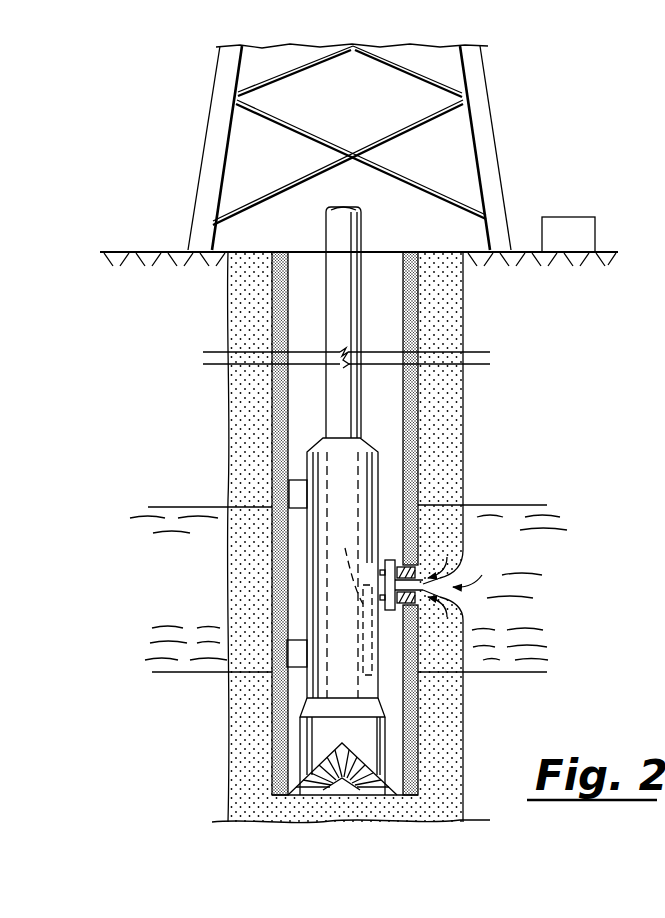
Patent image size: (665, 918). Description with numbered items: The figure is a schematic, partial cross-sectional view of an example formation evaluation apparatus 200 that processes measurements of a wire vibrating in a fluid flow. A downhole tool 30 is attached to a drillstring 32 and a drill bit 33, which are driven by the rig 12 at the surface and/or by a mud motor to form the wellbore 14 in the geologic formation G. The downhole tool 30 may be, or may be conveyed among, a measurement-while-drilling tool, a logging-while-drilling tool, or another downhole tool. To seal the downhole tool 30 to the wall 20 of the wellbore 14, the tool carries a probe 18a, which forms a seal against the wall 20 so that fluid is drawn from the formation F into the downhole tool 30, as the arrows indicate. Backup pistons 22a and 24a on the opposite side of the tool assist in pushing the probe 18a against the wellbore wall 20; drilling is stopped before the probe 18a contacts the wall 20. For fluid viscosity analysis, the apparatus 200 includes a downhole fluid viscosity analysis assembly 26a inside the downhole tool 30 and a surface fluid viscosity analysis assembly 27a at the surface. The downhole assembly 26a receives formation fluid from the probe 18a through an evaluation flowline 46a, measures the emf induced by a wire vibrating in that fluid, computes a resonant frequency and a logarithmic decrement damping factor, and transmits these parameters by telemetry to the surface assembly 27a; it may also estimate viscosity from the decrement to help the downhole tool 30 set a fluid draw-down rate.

The formation evaluation apparatus 200 is at (155, 177).
The rig 12 is at (497, 143).
The wellbore 14 is at (403, 268).
The surface fluid viscosity analysis assembly 27a is at (568, 234).
The drillstring 32 is at (324, 305).
The downhole tool 30 is at (384, 484).
The backup piston 22a is at (297, 480).
The backup piston 24a is at (292, 640).
The evaluation flowline 46a is at (344, 564).
The downhole fluid viscosity analysis assembly 26a is at (353, 638).
The probe 18a is at (400, 561).
The wall 20 is at (420, 638).
The drill bit 33 is at (293, 787).
The formation F is at (152, 652).
The geologic formation G is at (530, 454).